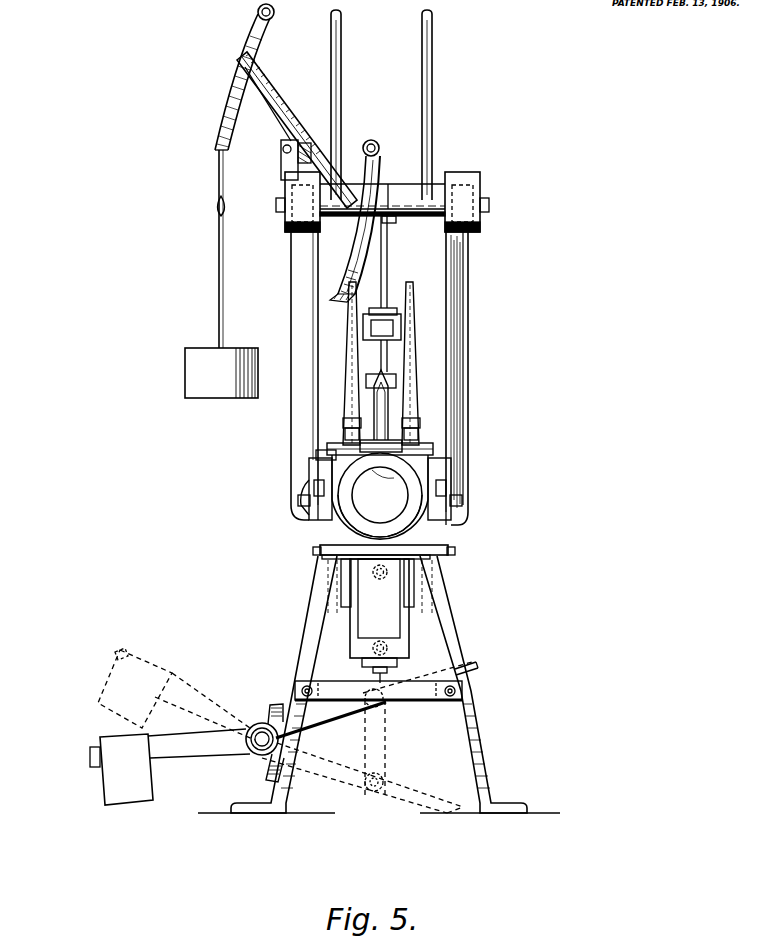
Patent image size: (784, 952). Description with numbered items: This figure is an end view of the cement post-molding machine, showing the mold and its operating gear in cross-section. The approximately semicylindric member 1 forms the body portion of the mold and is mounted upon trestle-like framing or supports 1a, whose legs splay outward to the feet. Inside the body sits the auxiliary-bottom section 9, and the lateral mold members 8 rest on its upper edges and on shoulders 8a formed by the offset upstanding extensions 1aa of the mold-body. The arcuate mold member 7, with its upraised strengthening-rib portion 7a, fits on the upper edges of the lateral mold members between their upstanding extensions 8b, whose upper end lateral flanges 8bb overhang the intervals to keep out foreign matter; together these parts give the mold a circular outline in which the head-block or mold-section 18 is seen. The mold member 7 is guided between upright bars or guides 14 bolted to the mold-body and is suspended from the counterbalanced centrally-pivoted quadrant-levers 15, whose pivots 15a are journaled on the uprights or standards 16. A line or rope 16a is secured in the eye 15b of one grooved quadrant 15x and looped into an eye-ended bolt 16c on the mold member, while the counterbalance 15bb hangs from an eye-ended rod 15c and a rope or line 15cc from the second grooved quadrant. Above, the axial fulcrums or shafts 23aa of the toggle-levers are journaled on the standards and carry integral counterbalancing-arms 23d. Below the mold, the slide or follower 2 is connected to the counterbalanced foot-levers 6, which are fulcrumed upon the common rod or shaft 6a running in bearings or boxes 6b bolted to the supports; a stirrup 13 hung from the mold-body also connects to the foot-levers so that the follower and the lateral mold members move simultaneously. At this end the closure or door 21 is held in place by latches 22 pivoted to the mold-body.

The semicylindric member 1 is at (330, 525).
The trestle-like framing or supports 1a is at (478, 742).
The offset upstanding extensions 1aa is at (322, 480).
The slide or follower 2 is at (432, 558).
The counterbalanced foot-levers 6 is at (322, 722).
The common rod or shaft 6a is at (262, 733).
The bearings or boxes 6b is at (254, 758).
The arcuate or curved mold member 7 is at (304, 496).
The upraised strengthening-rib portion 7a is at (395, 445).
The lateral mold members 8 is at (445, 470).
The shoulders 8a is at (300, 504).
The upstanding extensions 8b is at (410, 462).
The upper end lateral flanges 8bb is at (318, 455).
The auxiliary-bottom section 9 is at (418, 530).
The stirrup 13 is at (400, 648).
The upright bars or guides 14 is at (348, 400).
The counterbalanced centrally-pivoted quadrant-levers 15 is at (296, 102).
The fulcrum axes or pivots 15a is at (283, 152).
The eye 15b is at (273, 16).
The counterbalance 15bb is at (186, 384).
The eye-ended rod 15c is at (218, 318).
The rope or line 15cc is at (219, 196).
The grooved quadrant 15x is at (362, 248).
The uprights or standards 16 is at (292, 320).
The line or rope 16a is at (388, 285).
The eye-ended bolt 16c is at (385, 420).
The head-block or mold-section 18 is at (380, 495).
The closure or door 21 is at (340, 590).
The latches 22 is at (334, 566).
The axial fulcrums or shafts 23aa is at (398, 192).
The integral counterbalancing-arms 23d is at (342, 107).